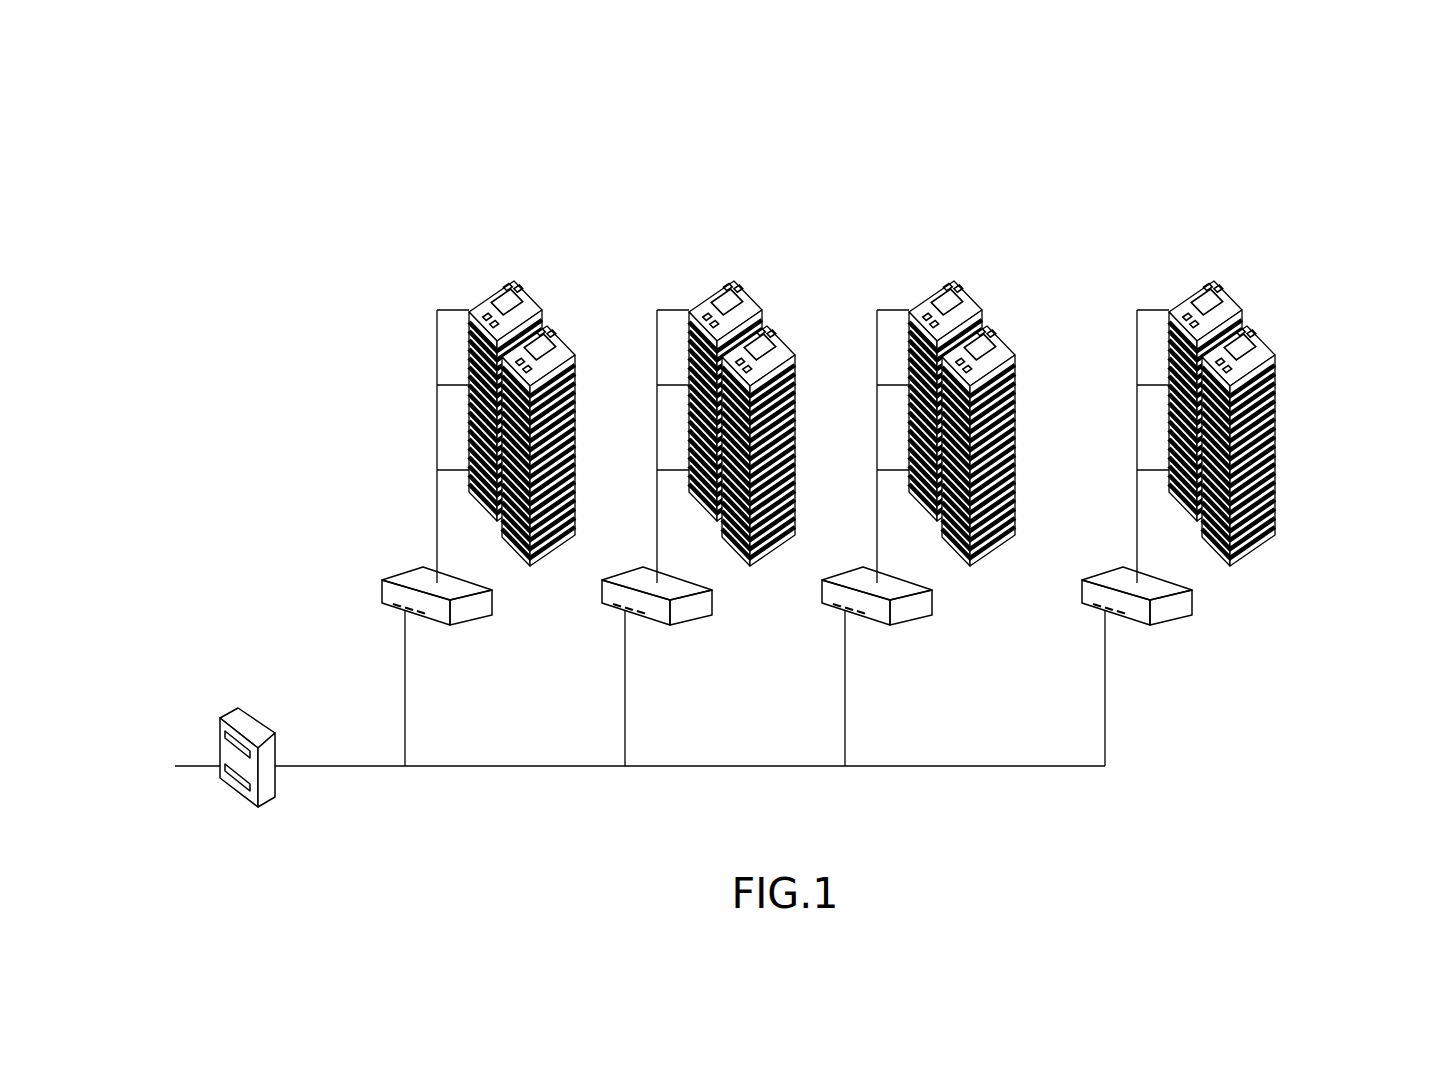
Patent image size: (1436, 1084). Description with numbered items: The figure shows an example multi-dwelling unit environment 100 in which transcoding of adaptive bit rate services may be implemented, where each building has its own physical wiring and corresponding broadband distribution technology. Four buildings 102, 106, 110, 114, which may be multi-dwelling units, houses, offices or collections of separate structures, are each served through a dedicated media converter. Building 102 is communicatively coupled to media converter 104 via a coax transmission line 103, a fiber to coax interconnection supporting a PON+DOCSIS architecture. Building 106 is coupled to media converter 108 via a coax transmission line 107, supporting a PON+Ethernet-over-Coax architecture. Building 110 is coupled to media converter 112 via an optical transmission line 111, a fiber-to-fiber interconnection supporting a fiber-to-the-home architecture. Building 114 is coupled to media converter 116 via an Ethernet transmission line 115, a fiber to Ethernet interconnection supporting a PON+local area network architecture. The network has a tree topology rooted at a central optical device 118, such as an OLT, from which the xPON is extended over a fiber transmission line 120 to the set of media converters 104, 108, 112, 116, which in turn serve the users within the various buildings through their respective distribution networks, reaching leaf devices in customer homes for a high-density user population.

The MDU environment 100 is at (1282, 182).
The building 102 is at (540, 307).
The coax transmission line 103 is at (437, 385).
The media converter 104 is at (382, 581).
The building 106 is at (773, 332).
The coax transmission line 107 is at (657, 375).
The media converter 108 is at (712, 590).
The building 110 is at (1000, 335).
The optical transmission line 111 is at (877, 343).
The media converter 112 is at (932, 590).
The building 114 is at (1265, 342).
The Ethernet transmission line 115 is at (1137, 342).
The media converter 116 is at (1192, 588).
The central optical device 118 is at (272, 730).
The fiber transmission line 120 is at (720, 768).